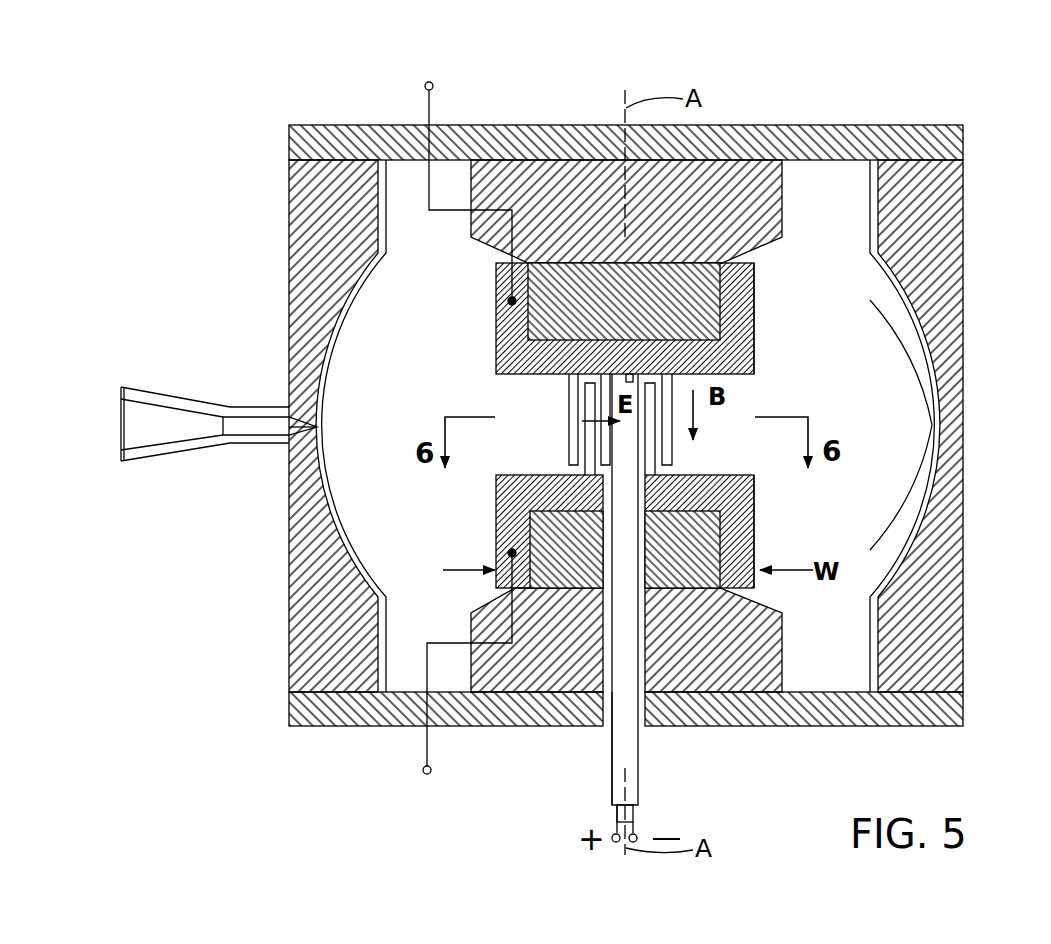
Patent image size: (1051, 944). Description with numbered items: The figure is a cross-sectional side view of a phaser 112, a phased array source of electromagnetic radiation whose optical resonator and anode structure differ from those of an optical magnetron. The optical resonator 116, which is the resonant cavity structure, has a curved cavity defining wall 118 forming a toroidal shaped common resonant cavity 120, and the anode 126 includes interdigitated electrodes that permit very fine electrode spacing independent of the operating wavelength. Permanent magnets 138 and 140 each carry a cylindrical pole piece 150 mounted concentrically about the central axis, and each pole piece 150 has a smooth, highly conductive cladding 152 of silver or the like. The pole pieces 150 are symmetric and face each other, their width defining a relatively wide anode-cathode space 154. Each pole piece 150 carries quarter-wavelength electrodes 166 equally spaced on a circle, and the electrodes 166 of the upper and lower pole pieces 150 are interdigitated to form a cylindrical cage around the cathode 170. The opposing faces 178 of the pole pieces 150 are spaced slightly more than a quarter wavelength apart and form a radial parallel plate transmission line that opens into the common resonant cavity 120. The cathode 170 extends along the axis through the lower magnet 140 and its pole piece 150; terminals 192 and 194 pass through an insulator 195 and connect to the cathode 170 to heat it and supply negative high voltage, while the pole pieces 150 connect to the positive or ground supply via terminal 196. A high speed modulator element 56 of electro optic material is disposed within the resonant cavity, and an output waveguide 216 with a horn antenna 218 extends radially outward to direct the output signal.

The phaser 112 is at (247, 168).
The optical resonator 116 is at (940, 622).
The high speed modulator element 56 is at (905, 285).
The cavity defining wall 118 is at (927, 386).
The common resonant cavity 120 is at (905, 475).
The permanent magnet 138 is at (722, 183).
The permanent magnet 140 is at (757, 677).
The pole piece 150 is at (553, 322).
The cladding 152 is at (517, 350).
The opposing faces 178 is at (743, 385).
The electrodes 166 is at (588, 452).
The cathode 170 is at (623, 653).
The insulator 195 is at (638, 755).
The terminal 194 is at (634, 817).
The terminal 192 is at (616, 820).
The terminal 196 is at (427, 105).
The output antenna 218 is at (158, 393).
The output waveguide 216 is at (254, 405).
The anode 126 is at (432, 405).
The anode-cathode space 154 is at (748, 403).